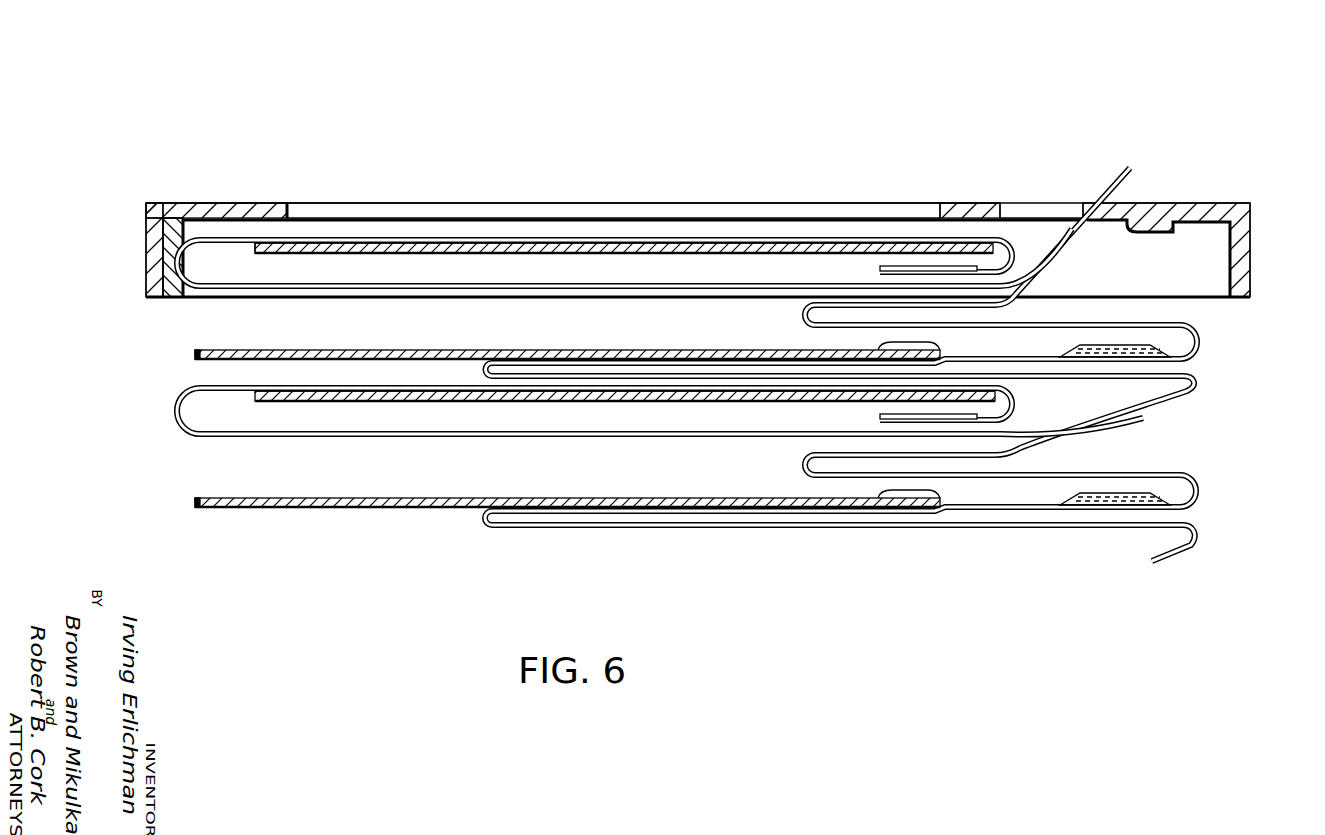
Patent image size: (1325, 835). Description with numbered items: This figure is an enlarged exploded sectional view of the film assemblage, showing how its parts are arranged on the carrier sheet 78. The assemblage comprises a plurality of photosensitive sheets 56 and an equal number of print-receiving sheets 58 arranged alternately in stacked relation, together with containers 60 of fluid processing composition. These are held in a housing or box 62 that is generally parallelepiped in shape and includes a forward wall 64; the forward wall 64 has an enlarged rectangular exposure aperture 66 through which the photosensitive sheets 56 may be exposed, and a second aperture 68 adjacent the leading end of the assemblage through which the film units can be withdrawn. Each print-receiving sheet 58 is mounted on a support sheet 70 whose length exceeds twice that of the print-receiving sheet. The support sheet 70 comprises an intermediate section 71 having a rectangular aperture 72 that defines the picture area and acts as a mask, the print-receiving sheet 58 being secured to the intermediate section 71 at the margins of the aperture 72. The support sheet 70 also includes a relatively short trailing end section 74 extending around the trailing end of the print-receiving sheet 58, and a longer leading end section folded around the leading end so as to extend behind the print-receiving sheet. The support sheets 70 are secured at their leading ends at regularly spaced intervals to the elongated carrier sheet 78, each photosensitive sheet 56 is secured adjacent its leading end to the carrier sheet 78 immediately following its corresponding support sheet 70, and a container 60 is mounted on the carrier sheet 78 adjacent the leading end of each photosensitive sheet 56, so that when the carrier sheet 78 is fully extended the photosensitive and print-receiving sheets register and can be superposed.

The photosensitive sheet 56 is at (227, 502).
The print-receiving sheet 58 is at (260, 399).
The container of fluid processing composition 60 is at (1110, 346).
The housing or box 62 is at (191, 199).
The forward wall 64 is at (215, 210).
The exposure aperture 66 is at (718, 212).
The second aperture 68 is at (1015, 213).
The support sheet 70 is at (1040, 267).
The intermediate section 71 is at (282, 243).
The rectangular aperture 72 is at (596, 242).
The trailing end section 74 is at (882, 276).
The carrier sheet 78 is at (1137, 546).